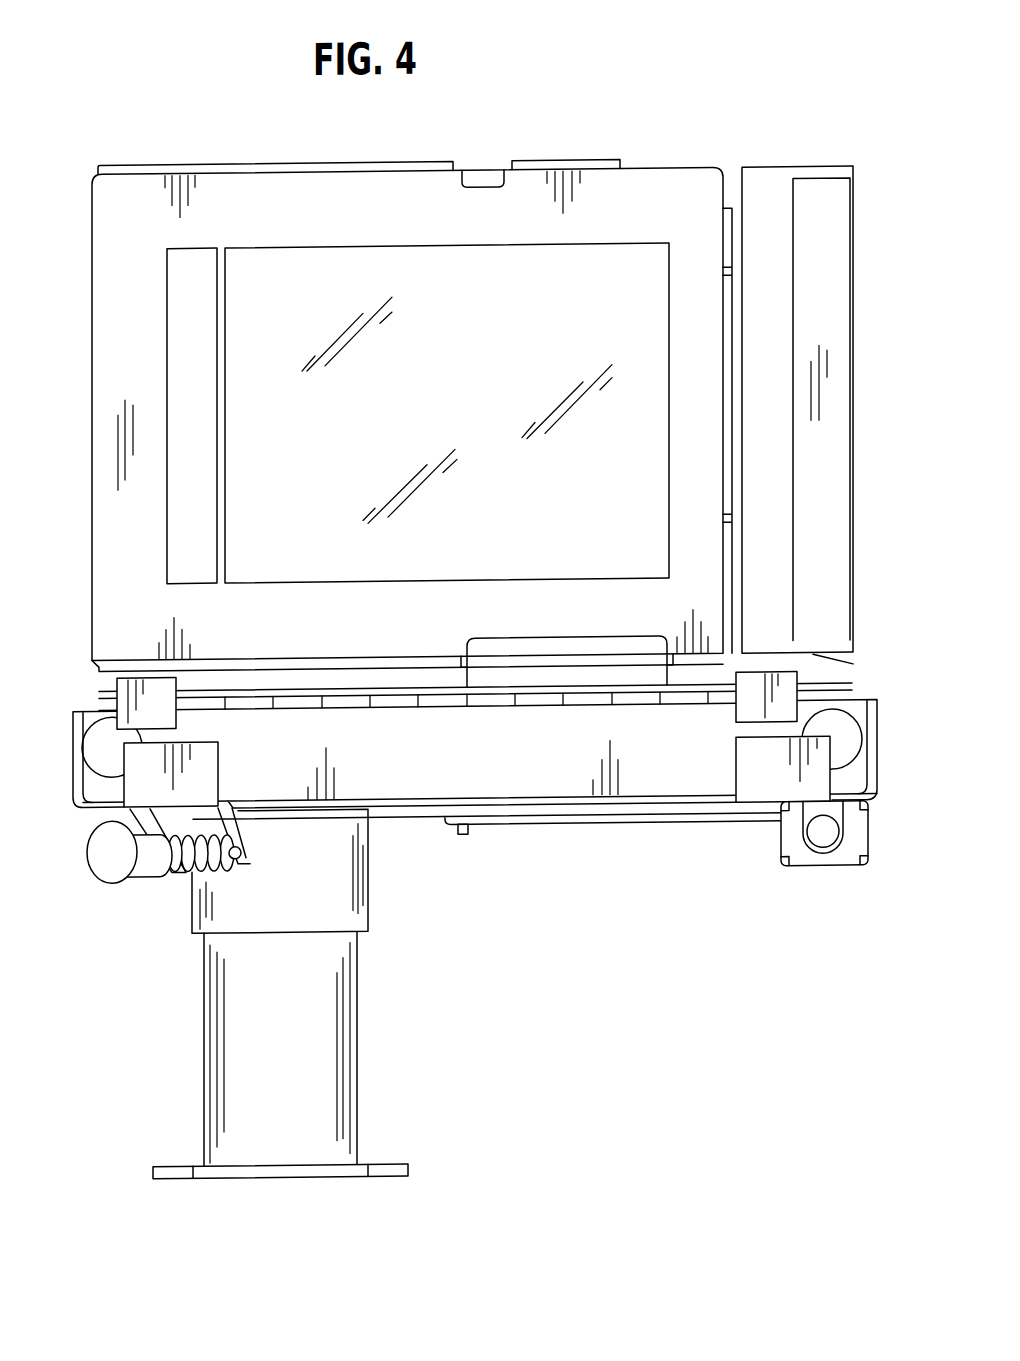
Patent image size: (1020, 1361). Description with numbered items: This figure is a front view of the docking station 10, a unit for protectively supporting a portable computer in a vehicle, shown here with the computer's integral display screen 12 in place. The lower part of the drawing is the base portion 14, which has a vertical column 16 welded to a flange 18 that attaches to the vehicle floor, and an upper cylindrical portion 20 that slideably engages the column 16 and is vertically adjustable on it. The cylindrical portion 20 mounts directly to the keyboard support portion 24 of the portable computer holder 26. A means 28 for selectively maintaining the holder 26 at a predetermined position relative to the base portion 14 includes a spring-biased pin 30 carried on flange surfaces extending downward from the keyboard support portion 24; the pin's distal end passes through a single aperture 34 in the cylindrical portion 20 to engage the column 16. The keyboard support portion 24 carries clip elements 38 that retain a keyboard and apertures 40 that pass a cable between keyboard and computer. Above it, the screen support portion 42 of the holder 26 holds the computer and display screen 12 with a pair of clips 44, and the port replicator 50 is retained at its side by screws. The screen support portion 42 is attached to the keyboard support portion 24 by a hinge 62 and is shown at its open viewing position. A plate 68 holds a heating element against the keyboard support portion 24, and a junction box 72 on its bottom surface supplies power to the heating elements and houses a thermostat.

The docking station 10 is at (221, 67).
The display screen 12 is at (91, 289).
The base portion 14 is at (170, 1029).
The vertical column 16 is at (257, 1096).
The flange 18 is at (383, 1164).
The upper cylindrical portion 20 is at (327, 909).
The keyboard support portion 24 is at (413, 815).
The portable computer holder 26 is at (72, 624).
The means for selectively maintaining the holder 28 is at (173, 893).
The spring-biased pin 30 is at (148, 858).
The aperture 34 is at (241, 853).
The clip elements 38 is at (197, 753).
The apertures 40 is at (853, 725).
The screen support portion 42 is at (598, 160).
The clips 44 is at (480, 173).
The port replicator 50 is at (819, 216).
The hinge 62 is at (305, 699).
The plate 68 is at (557, 819).
The junction box 72 is at (828, 875).